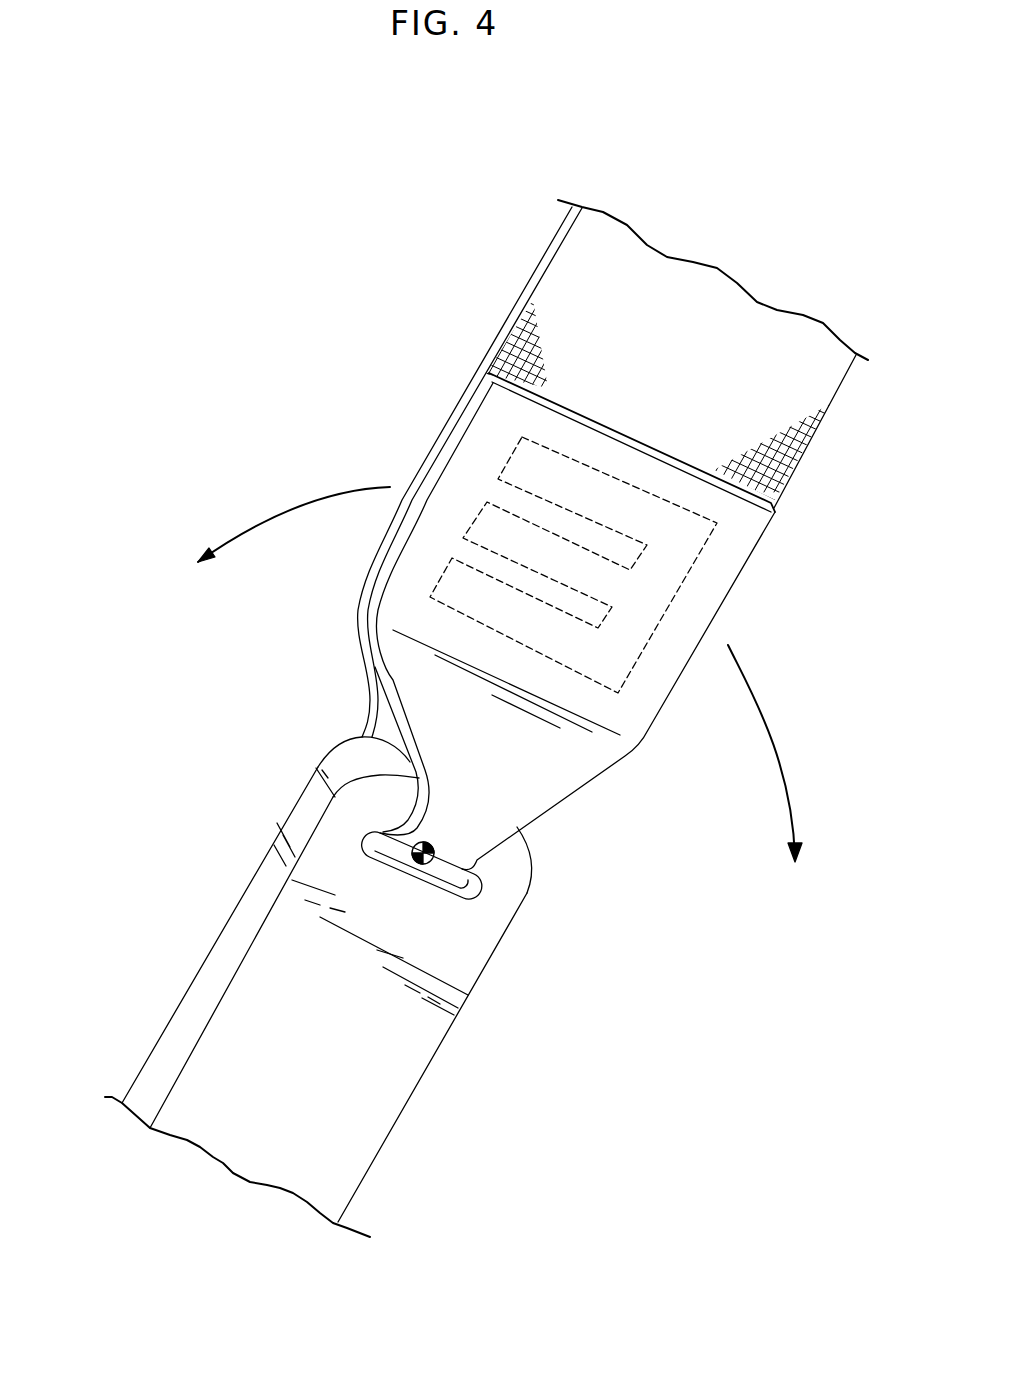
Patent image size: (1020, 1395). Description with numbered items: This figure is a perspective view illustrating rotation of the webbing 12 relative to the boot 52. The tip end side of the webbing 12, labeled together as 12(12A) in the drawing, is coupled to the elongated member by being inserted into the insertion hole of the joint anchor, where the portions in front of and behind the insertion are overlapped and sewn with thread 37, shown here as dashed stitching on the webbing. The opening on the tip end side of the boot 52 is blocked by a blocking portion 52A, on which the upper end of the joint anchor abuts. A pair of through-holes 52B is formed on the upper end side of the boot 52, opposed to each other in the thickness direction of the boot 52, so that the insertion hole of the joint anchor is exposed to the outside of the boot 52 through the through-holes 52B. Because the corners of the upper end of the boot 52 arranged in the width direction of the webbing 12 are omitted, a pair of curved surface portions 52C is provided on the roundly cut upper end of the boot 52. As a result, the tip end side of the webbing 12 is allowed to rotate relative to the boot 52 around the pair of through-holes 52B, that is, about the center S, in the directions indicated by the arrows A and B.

The webbing 12 is at (510, 317).
The tongue plate 12A is at (575, 621).
The thread 37 is at (703, 550).
The boot 52 is at (173, 1037).
The blocking portion 52A is at (362, 737).
The through-holes 52B is at (460, 898).
The curved surface portions 52C is at (313, 766).
The center S is at (432, 845).
The arrow A is at (775, 730).
The arrow B is at (290, 508).